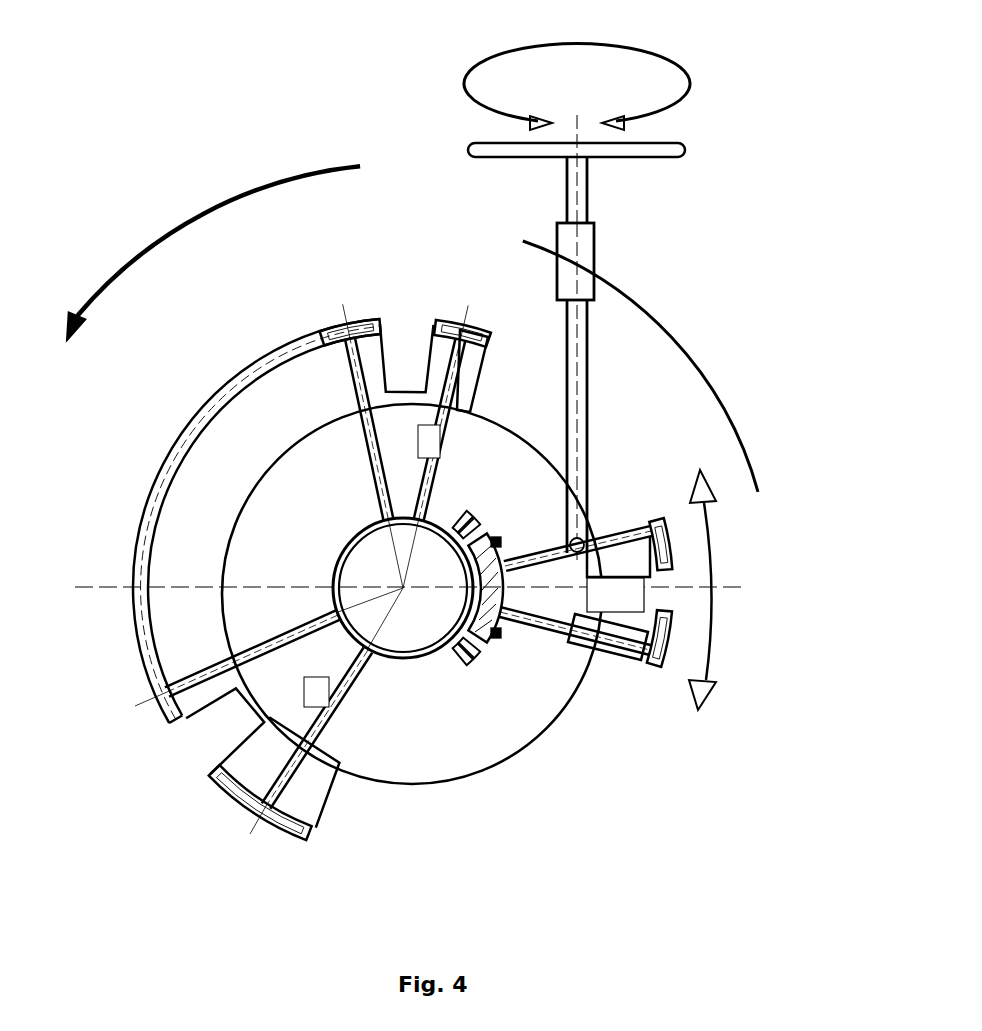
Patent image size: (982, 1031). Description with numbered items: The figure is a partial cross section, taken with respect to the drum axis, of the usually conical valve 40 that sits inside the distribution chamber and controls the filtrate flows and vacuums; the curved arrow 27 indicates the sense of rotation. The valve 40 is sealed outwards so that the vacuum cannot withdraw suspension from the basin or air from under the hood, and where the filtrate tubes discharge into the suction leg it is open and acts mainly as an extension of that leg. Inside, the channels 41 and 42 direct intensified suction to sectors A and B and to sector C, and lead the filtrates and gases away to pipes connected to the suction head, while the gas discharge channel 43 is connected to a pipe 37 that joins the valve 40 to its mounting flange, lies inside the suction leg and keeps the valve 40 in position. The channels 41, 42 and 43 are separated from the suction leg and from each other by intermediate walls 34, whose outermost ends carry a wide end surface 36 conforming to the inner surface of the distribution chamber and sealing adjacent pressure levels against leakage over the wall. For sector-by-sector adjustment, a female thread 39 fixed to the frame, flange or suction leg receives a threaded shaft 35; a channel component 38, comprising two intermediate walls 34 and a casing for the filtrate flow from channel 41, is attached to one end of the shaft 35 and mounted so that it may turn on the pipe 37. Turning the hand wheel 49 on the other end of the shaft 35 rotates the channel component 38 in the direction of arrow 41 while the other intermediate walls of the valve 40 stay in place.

The direction of rotation arrow 27 is at (107, 283).
The intermediate walls 34 is at (617, 633).
The threaded shaft 35 is at (605, 360).
The end surface 36 is at (466, 345).
The pipe 37 is at (405, 660).
The channel component 38 is at (533, 625).
The female thread 39 is at (613, 255).
The valve 40 is at (213, 382).
The channel 41 is at (683, 596).
The channel 42 is at (432, 325).
The gas discharge channel 43 is at (240, 740).
The hand wheel 49 is at (637, 148).